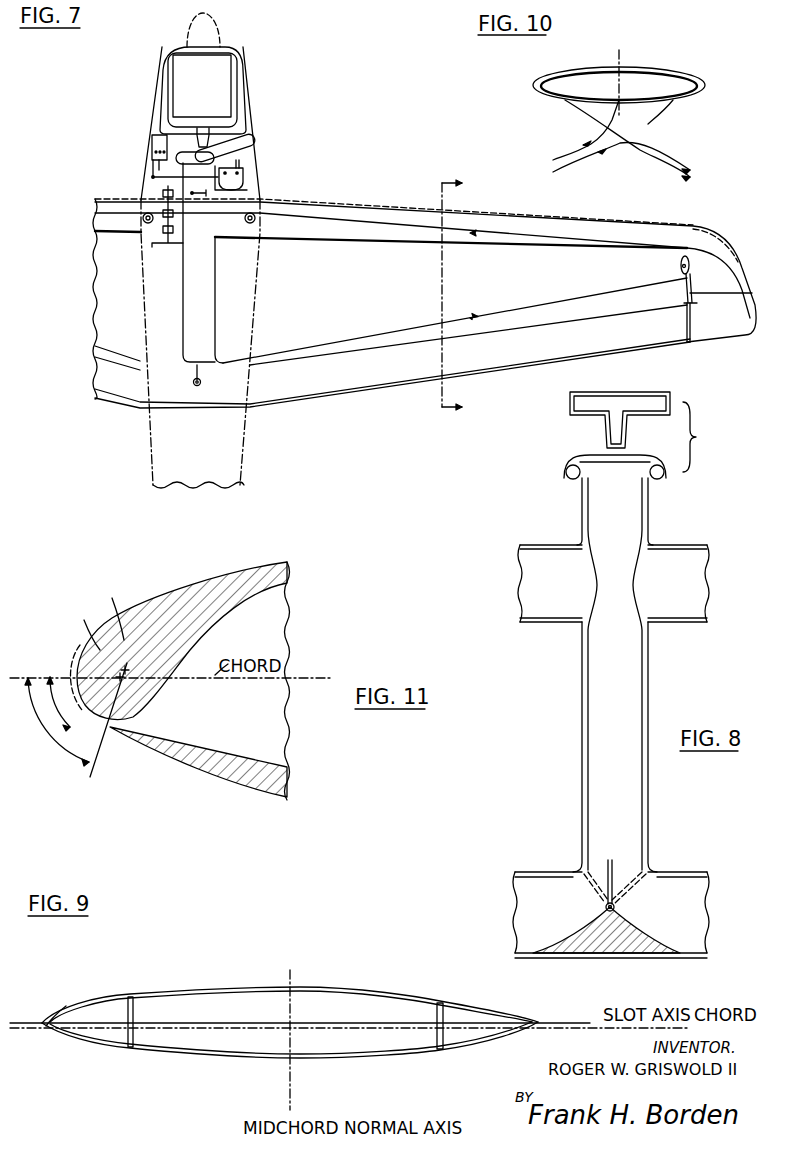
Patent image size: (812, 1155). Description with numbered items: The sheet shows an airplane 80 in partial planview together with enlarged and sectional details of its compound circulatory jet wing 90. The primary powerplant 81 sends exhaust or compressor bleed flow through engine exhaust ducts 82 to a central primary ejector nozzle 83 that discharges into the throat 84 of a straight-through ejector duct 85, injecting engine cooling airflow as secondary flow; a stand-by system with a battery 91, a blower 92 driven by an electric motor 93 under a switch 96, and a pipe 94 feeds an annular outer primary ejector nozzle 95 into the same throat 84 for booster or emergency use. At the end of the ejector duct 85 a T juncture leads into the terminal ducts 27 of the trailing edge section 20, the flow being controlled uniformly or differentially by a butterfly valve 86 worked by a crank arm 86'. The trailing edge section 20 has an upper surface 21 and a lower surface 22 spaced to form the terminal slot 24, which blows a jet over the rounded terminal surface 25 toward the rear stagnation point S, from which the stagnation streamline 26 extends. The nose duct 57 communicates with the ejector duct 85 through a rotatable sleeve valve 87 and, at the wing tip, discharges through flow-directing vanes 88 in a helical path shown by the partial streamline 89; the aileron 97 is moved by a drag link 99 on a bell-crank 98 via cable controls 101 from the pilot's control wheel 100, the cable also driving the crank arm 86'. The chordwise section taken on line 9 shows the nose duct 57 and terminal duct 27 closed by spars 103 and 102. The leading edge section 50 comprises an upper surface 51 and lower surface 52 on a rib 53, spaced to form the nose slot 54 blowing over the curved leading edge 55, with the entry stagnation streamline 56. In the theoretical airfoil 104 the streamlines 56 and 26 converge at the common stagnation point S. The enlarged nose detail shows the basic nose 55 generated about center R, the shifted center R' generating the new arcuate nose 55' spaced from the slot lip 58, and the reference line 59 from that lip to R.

In FIG. 7, the section line 9— 9 is at (462, 295).
In FIG. 7, the airfoil trailing edge section 20 is at (294, 387).
In FIG. 9, the airfoil trailing edge section 20 is at (475, 1008).
In FIG. 9, the upper surface 21 is at (408, 996).
In FIG. 9, the lower surface 22 is at (342, 1058).
In FIG. 7, the upper surface terminal circulatory blowing slot 24 is at (400, 388).
In FIG. 9, the upper surface terminal circulatory blowing slot 24 is at (538, 1020).
In FIG. 7, the bulbous curved terminal surface 25 is at (427, 385).
In FIG. 9, the bulbous curved terminal surface 25 is at (540, 1024).
In FIG. 10, the rear stagnation confluent streamline 26 is at (665, 152).
In FIG. 7, the internal duct 27 is at (118, 382).
In FIG. 8, the internal duct 27 is at (540, 885).
In FIG. 9, the internal duct 27 is at (460, 1035).
In FIG. 7, the leading edge section 50 is at (660, 235).
In FIG. 11, the leading edge section 50 is at (270, 562).
In FIG. 9, the leading edge section 50 is at (98, 995).
In FIG. 11, the upper surface 51 is at (170, 590).
In FIG. 9, the upper surface 51 is at (150, 993).
In FIG. 11, the lower surface 52 is at (245, 790).
In FIG. 9, the lower surface 52 is at (140, 1052).
In FIG. 11, the rib 53 is at (282, 618).
In FIG. 7, the lower surface nose circulatory blowing slot 54 is at (395, 203).
In FIG. 11, the lower surface nose circulatory blowing slot 54 is at (137, 730).
In FIG. 9, the lower surface nose circulatory blowing slot 54 is at (43, 1030).
In FIG. 7, the curved leading edge surface 55 is at (374, 177).
In FIG. 11, the curved leading edge surface 55 is at (41, 653).
In FIG. 9, the curved leading edge surface 55 is at (45, 1005).
In FIG. 11, the newly-developed arcuate nose 55' is at (52, 663).
In FIG. 10, the entry flow stagnation streamline 56 is at (590, 133).
In FIG. 7, the nose duct 57 is at (500, 225).
In FIG. 11, the nose duct 57 is at (275, 742).
In FIG. 8, the nose duct 57 is at (545, 580).
In FIG. 9, the nose duct 57 is at (100, 1035).
In FIG. 11, the slot lip 58 is at (115, 735).
In FIG. 11, the reference line 59 is at (92, 775).
In FIG. 7, the airplane 80 is at (150, 440).
In FIG. 7, the primary powerplant 81 is at (215, 60).
In FIG. 7, the engine exhaust ducts 82 is at (170, 72).
In FIG. 7, the central primary ejector nozzle 83 is at (203, 135).
In FIG. 8, the central primary ejector nozzle 83 is at (630, 448).
In FIG. 7, the throat 84 is at (185, 152).
In FIG. 8, the throat 84 is at (600, 457).
In FIG. 7, the straight-through ejector duct 85 is at (200, 292).
In FIG. 8, the straight-through ejector duct 85 is at (581, 716).
In FIG. 8, the butterfly valve 86 is at (610, 893).
In FIG. 7, the crank arm 86' is at (219, 380).
In FIG. 7, the rotatable sleeve valve 87 is at (197, 199).
In FIG. 8, the rotatable sleeve valve 87 is at (625, 548).
In FIG. 7, the flow-directing vanes 88 is at (720, 240).
In FIG. 7, the partial streamline 89 is at (738, 305).
In FIG. 7, the wing 90 is at (103, 276).
In FIG. 9, the wing 90 is at (80, 963).
In FIG. 7, the battery 91 is at (152, 145).
In FIG. 7, the blower 92 is at (248, 140).
In FIG. 7, the electric motor 93 is at (245, 185).
In FIG. 7, the pipe 94 is at (243, 158).
In FIG. 7, the annular outer primary ejector nozzle 95 is at (235, 163).
In FIG. 8, the annular outer primary ejector nozzle 95 is at (566, 472).
In FIG. 7, the switch 96 is at (152, 171).
In FIG. 7, the aileron 97 is at (745, 321).
In FIG. 7, the bell-crank 98 is at (680, 268).
In FIG. 7, the drag link 99 is at (691, 292).
In FIG. 7, the pilot's control wheel 100 is at (160, 245).
In FIG. 7, the cable controls 101 is at (410, 235).
In FIG. 9, the spar 102 is at (436, 1040).
In FIG. 9, the spar 103 is at (135, 1008).
In FIG. 10, the airfoil 104 is at (678, 75).
In FIG. 10, the stagnation point S is at (617, 97).
In FIG. 11, the leading edge radius center R is at (97, 640).
In FIG. 11, the new radius center R' is at (114, 625).